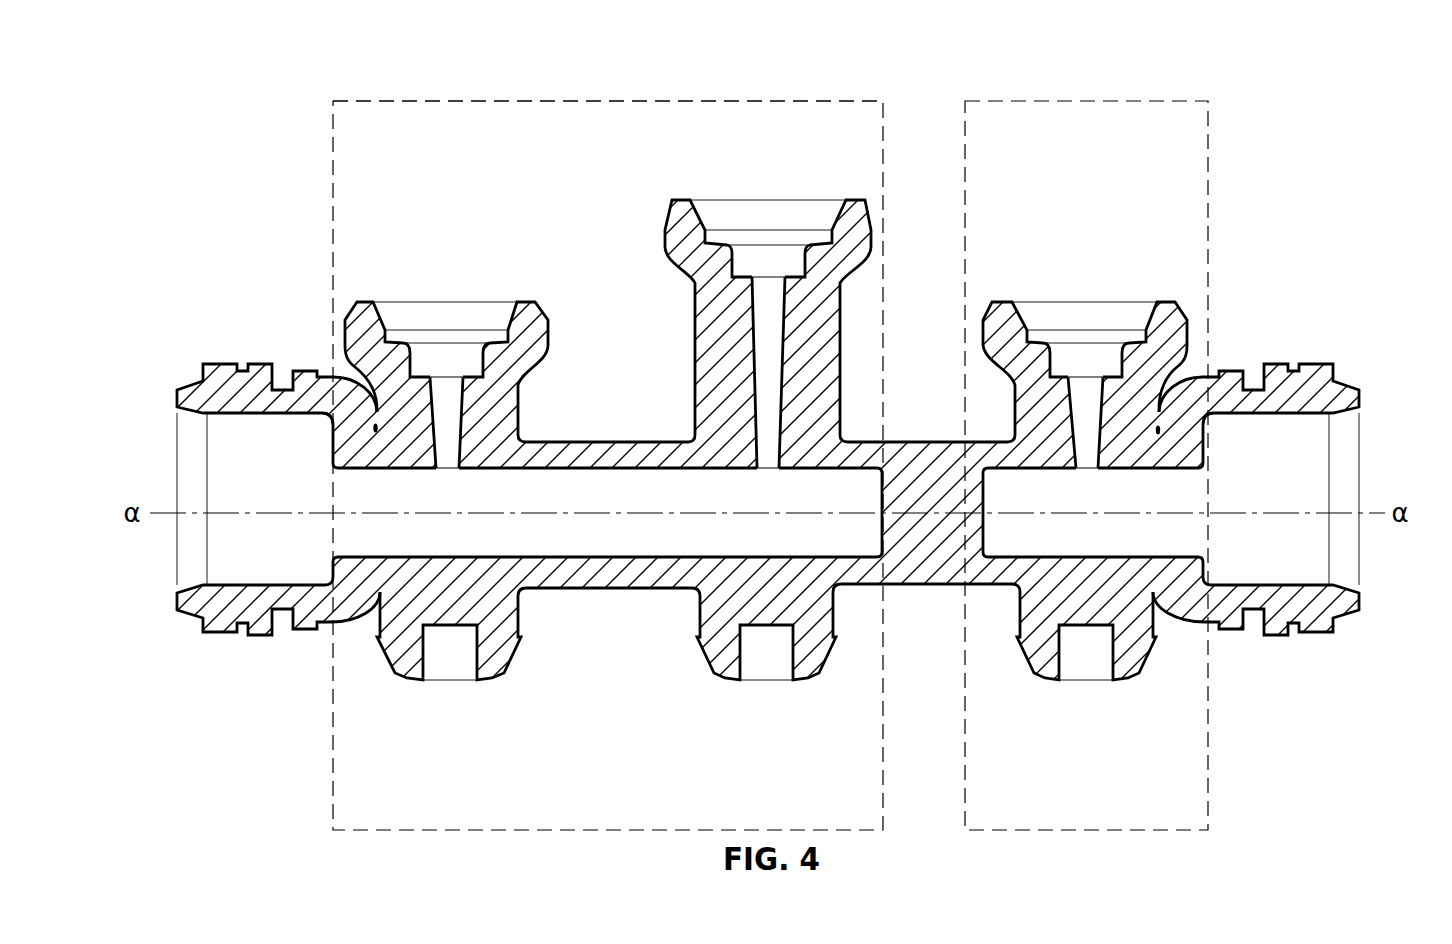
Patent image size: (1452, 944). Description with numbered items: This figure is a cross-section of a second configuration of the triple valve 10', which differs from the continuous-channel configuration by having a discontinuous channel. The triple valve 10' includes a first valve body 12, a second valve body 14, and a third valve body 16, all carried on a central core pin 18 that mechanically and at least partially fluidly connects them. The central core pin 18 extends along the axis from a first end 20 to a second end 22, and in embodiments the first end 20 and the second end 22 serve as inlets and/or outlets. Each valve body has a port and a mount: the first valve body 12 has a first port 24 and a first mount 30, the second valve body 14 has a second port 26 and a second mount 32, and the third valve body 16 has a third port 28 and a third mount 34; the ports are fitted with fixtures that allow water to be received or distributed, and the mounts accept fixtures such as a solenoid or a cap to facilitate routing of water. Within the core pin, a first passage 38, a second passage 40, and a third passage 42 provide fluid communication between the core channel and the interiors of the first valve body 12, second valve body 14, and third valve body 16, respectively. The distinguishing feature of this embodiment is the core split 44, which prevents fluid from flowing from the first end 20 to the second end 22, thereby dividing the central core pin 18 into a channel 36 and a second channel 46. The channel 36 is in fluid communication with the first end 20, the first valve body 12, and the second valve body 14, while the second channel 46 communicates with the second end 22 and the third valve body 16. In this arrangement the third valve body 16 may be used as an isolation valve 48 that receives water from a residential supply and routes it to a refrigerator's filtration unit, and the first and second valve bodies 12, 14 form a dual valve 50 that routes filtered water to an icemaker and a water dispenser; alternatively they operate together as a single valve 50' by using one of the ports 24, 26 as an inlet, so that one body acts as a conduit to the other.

The triple valve 10' is at (726, 379).
The first valve body 12 is at (527, 436).
The second valve body 14 is at (823, 322).
The third valve body 16 is at (1015, 440).
The central core pin 18 is at (940, 586).
The first end 20 is at (166, 423).
The second end 22 is at (1370, 423).
The first port 24 is at (433, 706).
The second port 26 is at (744, 706).
The third port 28 is at (1069, 706).
The first mount 30 is at (390, 302).
The second mount 32 is at (714, 199).
The third mount 34 is at (1037, 302).
The channel 36 is at (631, 556).
The first passage 38 is at (449, 376).
The second passage 40 is at (767, 263).
The third passage 42 is at (1086, 376).
The core split 44 is at (915, 521).
The second channel 46 is at (1156, 562).
The isolation valve 48 is at (989, 101).
The dual valve 50 is at (608, 429).
The single valve 50' is at (608, 65).